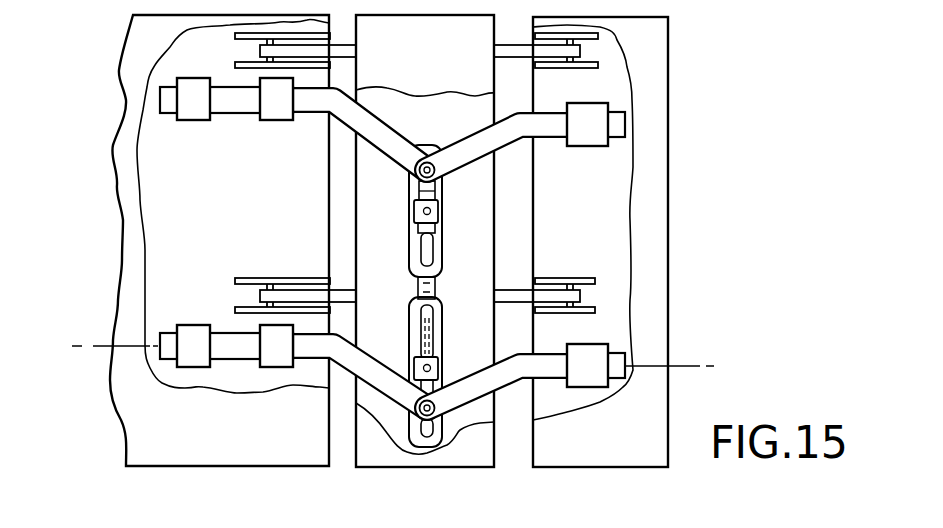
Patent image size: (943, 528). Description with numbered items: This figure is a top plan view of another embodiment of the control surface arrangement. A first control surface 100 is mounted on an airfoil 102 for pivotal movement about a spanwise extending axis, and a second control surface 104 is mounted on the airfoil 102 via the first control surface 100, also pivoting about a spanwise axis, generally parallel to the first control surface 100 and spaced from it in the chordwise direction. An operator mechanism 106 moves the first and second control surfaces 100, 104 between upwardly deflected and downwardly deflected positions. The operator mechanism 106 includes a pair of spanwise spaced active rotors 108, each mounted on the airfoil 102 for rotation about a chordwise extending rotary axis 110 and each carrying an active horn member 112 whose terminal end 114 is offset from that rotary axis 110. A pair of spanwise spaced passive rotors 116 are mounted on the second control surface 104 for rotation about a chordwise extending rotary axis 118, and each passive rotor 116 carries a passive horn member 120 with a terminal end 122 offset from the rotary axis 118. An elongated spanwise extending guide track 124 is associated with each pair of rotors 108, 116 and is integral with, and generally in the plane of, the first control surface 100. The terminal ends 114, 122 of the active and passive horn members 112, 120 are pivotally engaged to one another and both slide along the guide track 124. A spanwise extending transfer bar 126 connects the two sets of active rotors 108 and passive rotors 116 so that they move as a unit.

The first control surface 100 is at (472, 456).
The airfoil 102 is at (129, 466).
The second control surface 104 is at (652, 64).
The operator mechanism 106 is at (116, 101).
The active rotor 108 is at (234, 117).
The rotary axis 110 is at (106, 345).
The active horn member 112 is at (387, 131).
The terminal end 114 is at (420, 168).
The passive rotor 116 is at (628, 124).
The rotary axis 118 is at (686, 365).
The passive horn member 120 is at (510, 134).
The terminal end 122 is at (468, 146).
The guide track 124 is at (440, 310).
The transfer bar 126 is at (413, 229).